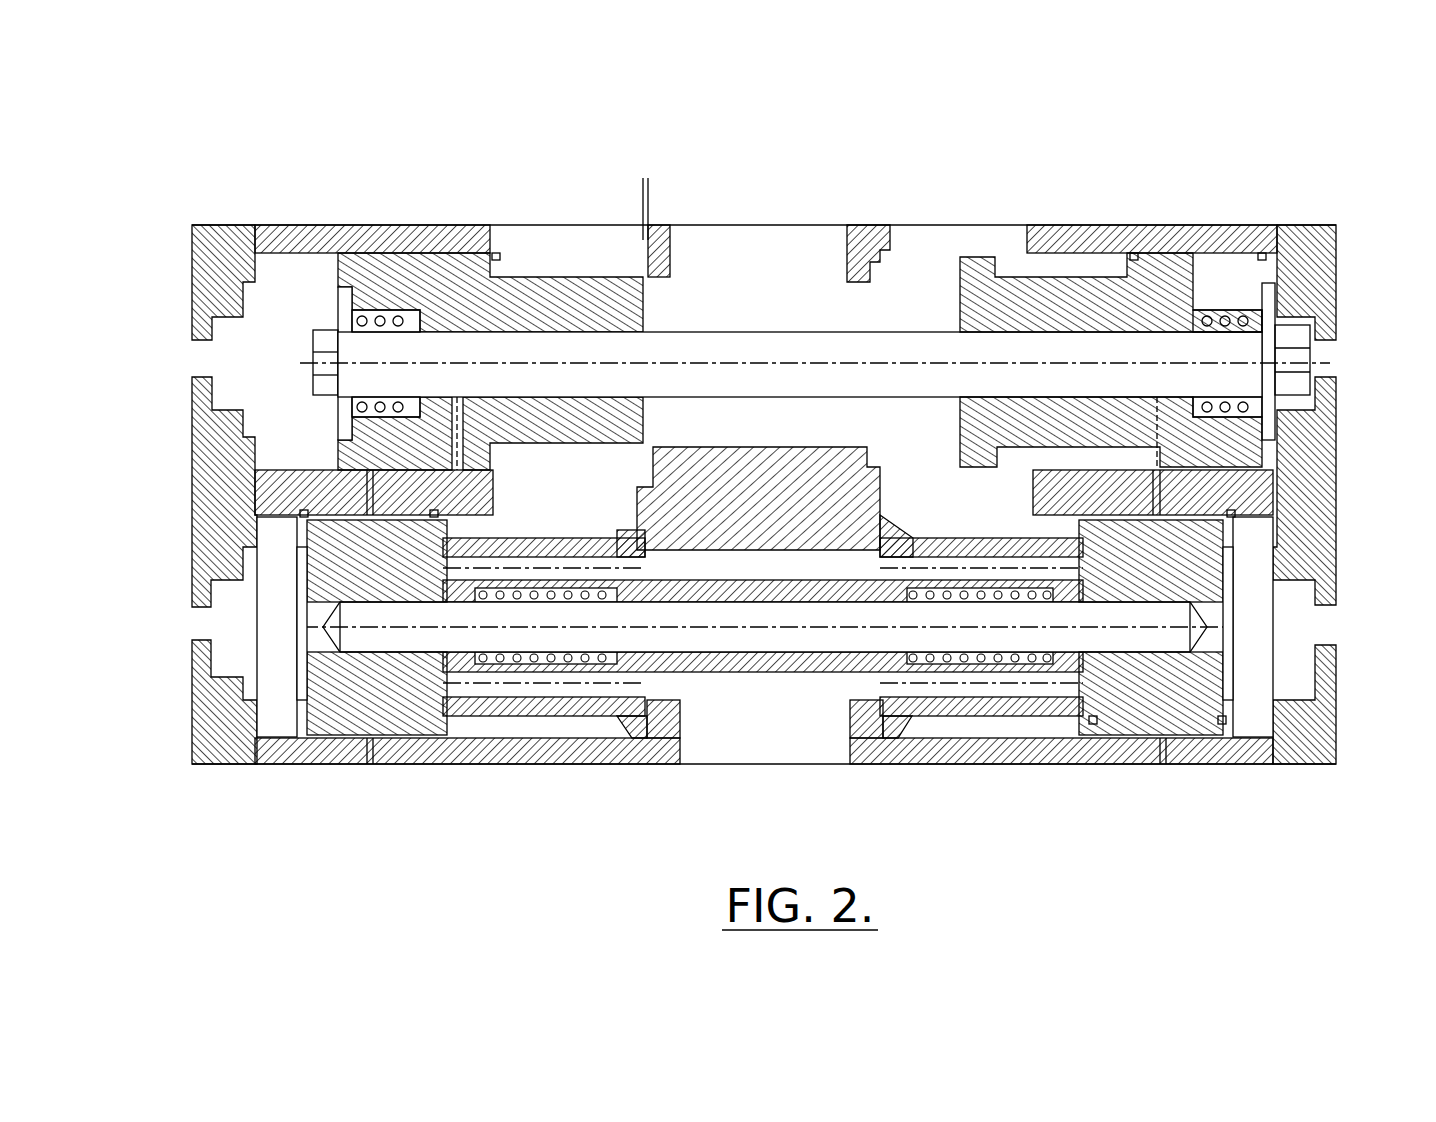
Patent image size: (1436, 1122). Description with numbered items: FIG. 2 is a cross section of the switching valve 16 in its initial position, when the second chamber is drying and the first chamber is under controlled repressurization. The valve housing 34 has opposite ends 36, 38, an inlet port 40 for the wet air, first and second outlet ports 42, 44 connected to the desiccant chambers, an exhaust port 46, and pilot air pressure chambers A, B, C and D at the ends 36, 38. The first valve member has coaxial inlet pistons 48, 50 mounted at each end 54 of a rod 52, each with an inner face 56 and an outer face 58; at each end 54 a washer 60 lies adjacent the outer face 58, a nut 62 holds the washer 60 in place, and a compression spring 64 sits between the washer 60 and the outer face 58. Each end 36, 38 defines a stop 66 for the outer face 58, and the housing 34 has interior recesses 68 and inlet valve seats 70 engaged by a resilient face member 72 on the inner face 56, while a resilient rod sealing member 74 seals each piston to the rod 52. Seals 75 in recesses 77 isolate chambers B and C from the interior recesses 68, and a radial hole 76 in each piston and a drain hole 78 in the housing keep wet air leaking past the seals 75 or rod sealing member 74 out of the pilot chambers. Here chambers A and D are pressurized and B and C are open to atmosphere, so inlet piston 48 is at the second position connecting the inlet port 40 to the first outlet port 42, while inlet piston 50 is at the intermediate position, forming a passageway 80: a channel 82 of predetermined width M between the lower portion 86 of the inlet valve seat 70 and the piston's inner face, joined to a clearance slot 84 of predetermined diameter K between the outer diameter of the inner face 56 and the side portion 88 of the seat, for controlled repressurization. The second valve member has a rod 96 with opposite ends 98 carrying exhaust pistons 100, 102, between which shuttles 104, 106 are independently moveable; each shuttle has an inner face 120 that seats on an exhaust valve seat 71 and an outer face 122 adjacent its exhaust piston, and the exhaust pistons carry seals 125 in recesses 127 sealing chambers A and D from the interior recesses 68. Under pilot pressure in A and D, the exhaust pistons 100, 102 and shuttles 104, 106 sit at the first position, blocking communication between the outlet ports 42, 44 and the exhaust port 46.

The switching valve 16 is at (978, 118).
The valve housing 34 is at (393, 225).
The end of valve housing 36 is at (250, 473).
The end of valve housing 38 is at (1337, 470).
The inlet port 40 is at (762, 225).
The first outlet port 42 is at (910, 227).
The second outlet port 44 is at (550, 225).
The exhaust port 46 is at (765, 767).
The inlet piston 48 is at (1003, 277).
The inlet piston 50 is at (420, 265).
The rod 52 is at (743, 330).
The end of rod 54 is at (357, 387).
The inner face 56 is at (960, 310).
The outer face 58 is at (327, 292).
The washer 60 is at (337, 302).
The nut 62 is at (313, 343).
The compression spring 64 is at (380, 320).
The stop 66 is at (253, 265).
The interior recesses 68 is at (814, 433).
The inlet valve seat 70 is at (678, 248).
The exhaust valve seat 71 is at (617, 518).
The resilient face member 72 is at (658, 245).
The resilient rod sealing member 74 is at (1075, 325).
The seals 75 is at (496, 253).
The radial hole 76 is at (463, 423).
The recesses 77 is at (480, 250).
The drain hole 78 is at (368, 767).
The passageway 80 is at (617, 468).
The channel 82 is at (652, 288).
The clearance slot 84 is at (595, 263).
The lower portion of inlet valve seat 86 is at (677, 273).
The side portion of inlet valve seat 88 is at (877, 272).
The rod 96 is at (830, 627).
The end of rod 98 is at (278, 753).
The exhaust piston 100 is at (1157, 713).
The exhaust piston 102 is at (330, 750).
The shuttle 104 is at (990, 700).
The shuttle 106 is at (565, 683).
The inner face of shuttle 120 is at (633, 757).
The outer face of shuttle 122 is at (443, 740).
The seals 125 is at (1093, 722).
The recesses 127 is at (1100, 740).
The pilot air pressure chamber A is at (232, 652).
The pilot air pressure chamber B is at (220, 360).
The pilot air pressure chamber C is at (1305, 345).
The pilot air pressure chamber D is at (1300, 647).
The predetermined diameter K is at (610, 232).
The predetermined width M is at (683, 192).